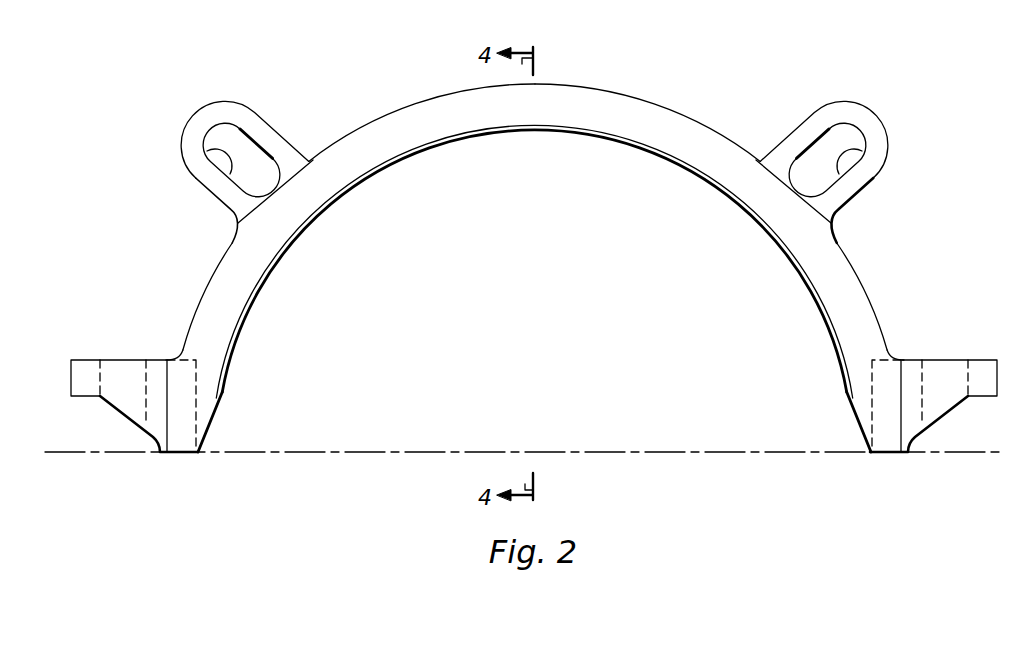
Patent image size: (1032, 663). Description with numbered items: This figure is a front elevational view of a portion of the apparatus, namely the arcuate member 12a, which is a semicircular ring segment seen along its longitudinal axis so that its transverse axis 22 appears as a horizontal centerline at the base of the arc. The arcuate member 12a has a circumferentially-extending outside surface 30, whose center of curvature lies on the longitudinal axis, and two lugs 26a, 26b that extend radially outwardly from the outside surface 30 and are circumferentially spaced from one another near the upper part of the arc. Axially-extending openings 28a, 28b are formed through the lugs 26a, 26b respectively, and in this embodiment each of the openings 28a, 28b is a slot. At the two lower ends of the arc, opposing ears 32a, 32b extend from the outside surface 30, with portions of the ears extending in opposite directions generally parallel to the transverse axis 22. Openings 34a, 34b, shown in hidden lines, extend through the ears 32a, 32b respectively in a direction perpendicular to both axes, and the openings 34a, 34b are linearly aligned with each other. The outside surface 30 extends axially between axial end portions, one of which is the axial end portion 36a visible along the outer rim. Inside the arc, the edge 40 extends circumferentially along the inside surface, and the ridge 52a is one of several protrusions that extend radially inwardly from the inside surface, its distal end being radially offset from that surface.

The arcuate member 12a is at (535, 246).
The transverse axis 22 is at (372, 450).
The lug 26a is at (852, 102).
The lug 26b is at (217, 102).
The opening 28a is at (880, 163).
The opening 28b is at (192, 163).
The outside surface 30 is at (388, 112).
The ear 32a is at (983, 360).
The ear 32b is at (85, 360).
The opening 34a is at (922, 380).
The opening 34b is at (146, 380).
The axial end portion 36a is at (612, 108).
The edge 40 is at (262, 277).
The ridge 52a is at (315, 223).